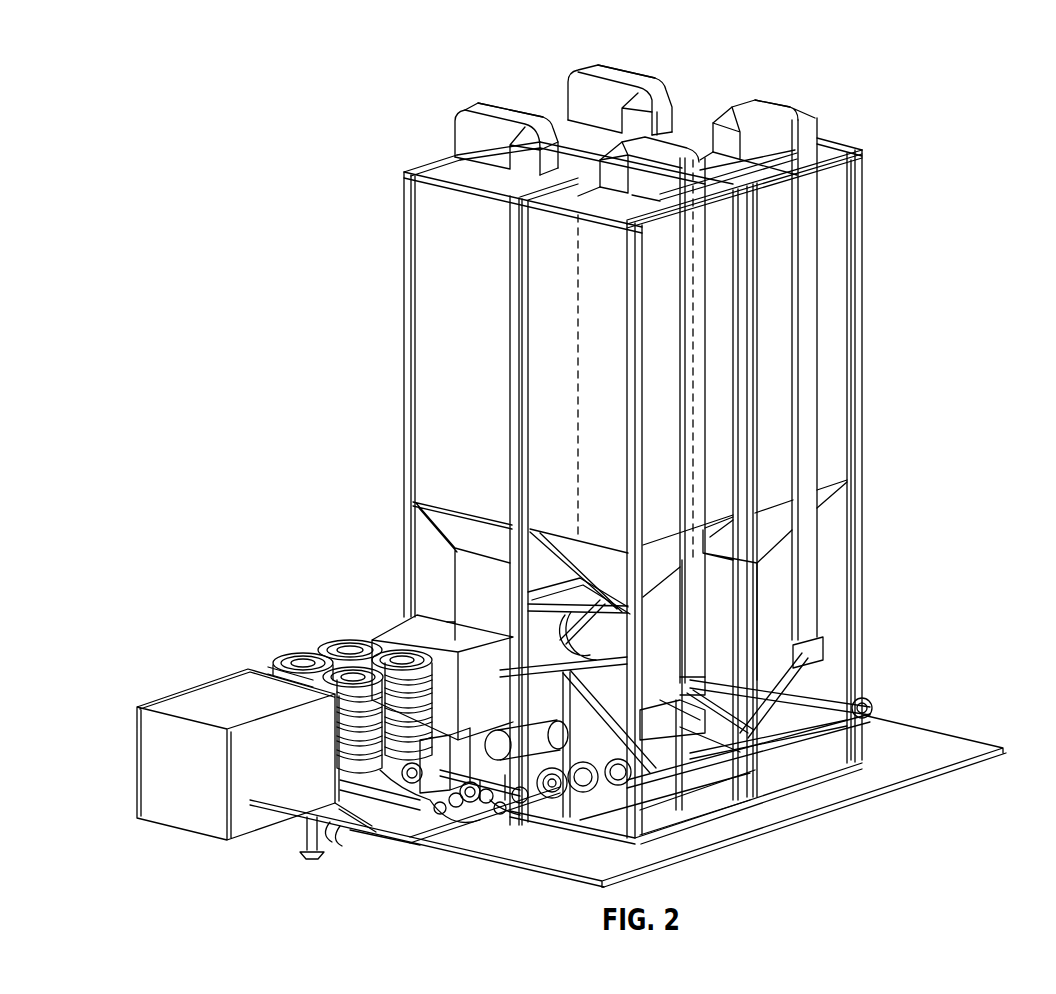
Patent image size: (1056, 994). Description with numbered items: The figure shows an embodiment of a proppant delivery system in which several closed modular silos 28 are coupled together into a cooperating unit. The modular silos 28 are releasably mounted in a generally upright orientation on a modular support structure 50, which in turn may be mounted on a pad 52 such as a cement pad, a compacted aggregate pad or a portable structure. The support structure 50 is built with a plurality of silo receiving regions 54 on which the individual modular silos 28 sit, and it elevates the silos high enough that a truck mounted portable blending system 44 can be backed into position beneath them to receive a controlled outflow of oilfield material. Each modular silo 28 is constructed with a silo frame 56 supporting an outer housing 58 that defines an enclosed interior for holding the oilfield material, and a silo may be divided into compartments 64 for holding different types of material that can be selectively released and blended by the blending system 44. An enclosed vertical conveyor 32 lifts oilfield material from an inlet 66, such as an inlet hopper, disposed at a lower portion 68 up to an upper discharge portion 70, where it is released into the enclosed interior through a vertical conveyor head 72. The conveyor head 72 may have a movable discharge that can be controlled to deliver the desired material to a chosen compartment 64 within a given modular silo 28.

The modular silo 28 is at (480, 196).
The enclosed vertical conveyor 32 is at (487, 100).
The portable blending system 44 is at (325, 635).
The modular support structure 50 is at (945, 712).
The pad 52 is at (975, 745).
The silo receiving region 54 is at (858, 688).
The silo frame 56 is at (878, 250).
The outer housing 58 is at (838, 362).
The compartment 64 is at (545, 140).
The inlet 66 is at (395, 600).
The lower portion 68 is at (393, 522).
The upper discharge portion 70 is at (383, 183).
The vertical conveyor head 72 is at (480, 104).